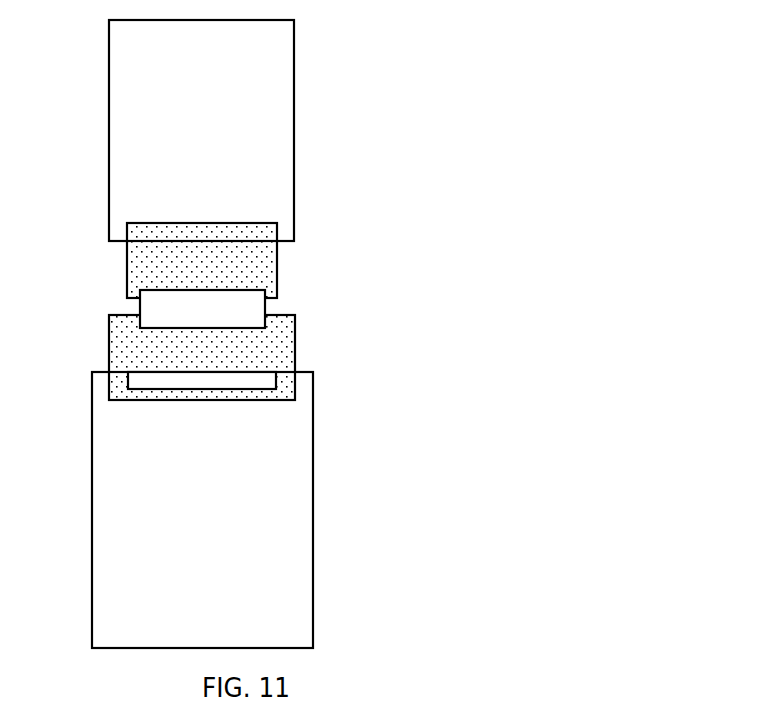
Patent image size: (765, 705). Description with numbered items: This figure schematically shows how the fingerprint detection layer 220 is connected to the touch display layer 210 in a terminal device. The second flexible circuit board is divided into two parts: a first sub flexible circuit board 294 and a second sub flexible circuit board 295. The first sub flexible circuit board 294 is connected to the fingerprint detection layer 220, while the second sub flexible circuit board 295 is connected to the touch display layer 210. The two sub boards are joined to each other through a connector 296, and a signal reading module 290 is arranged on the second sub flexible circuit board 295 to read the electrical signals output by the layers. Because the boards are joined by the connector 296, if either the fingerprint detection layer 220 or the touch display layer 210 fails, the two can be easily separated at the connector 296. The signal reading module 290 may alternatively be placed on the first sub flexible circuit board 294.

The fingerprint detection layer 220 is at (273, 107).
The touch display layer 210 is at (287, 565).
The first sub flexible circuit board 294 is at (258, 232).
The connector 296 is at (252, 298).
The second sub flexible circuit board 295 is at (278, 326).
The signal reading module 290 is at (258, 383).